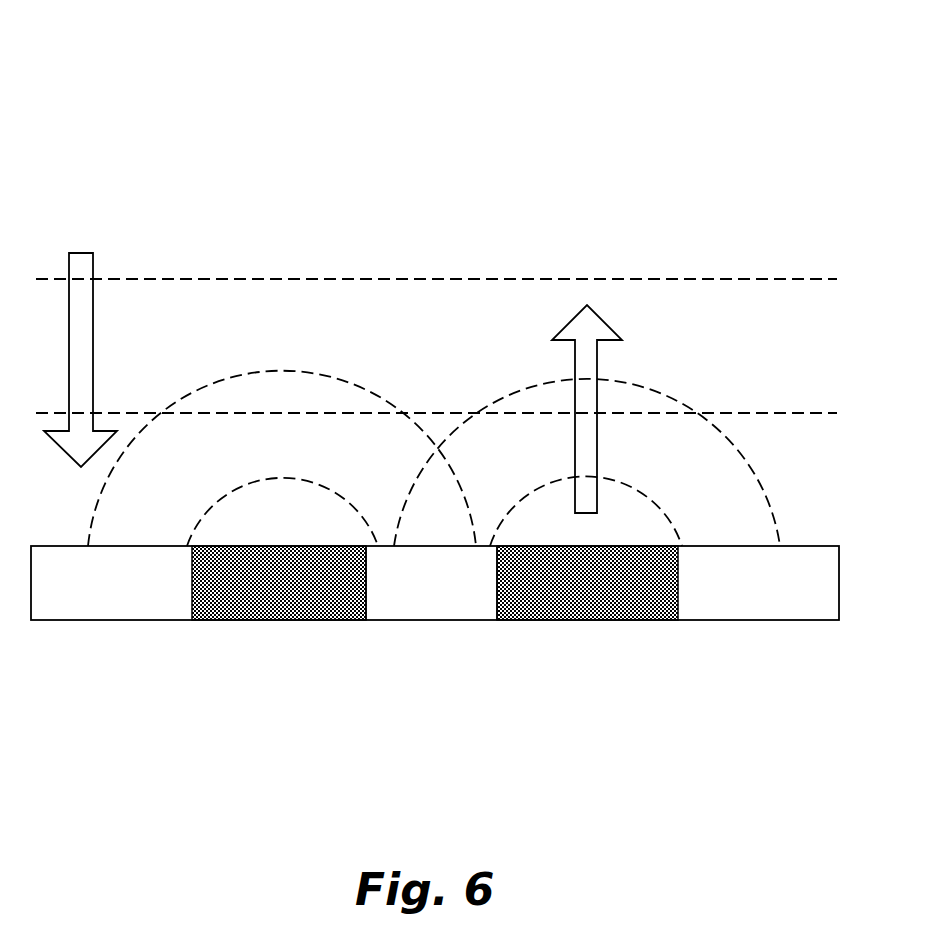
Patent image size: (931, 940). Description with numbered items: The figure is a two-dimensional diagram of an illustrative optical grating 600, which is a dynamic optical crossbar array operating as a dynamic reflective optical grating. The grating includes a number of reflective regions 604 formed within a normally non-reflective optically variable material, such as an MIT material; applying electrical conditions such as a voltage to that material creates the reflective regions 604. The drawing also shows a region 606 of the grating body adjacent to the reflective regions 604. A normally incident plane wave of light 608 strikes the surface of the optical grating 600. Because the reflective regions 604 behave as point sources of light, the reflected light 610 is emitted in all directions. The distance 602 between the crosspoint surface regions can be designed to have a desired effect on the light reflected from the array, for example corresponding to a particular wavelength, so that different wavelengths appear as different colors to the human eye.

The optical grating 600 is at (247, 144).
The distance 602 is at (497, 621).
The reflective regions 604 is at (248, 620).
The substrate 606 is at (758, 620).
The normally incident plane wave of light 608 is at (93, 363).
The reflected light 610 is at (597, 357).